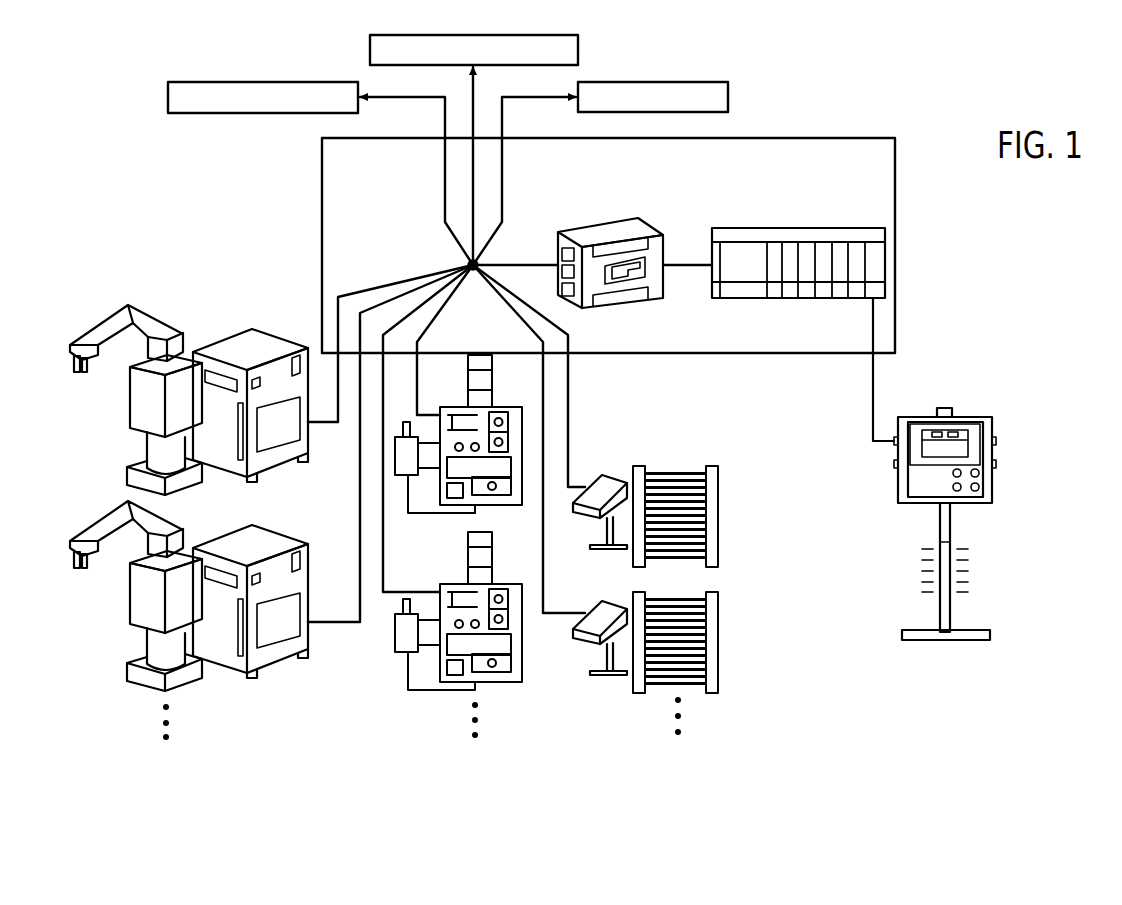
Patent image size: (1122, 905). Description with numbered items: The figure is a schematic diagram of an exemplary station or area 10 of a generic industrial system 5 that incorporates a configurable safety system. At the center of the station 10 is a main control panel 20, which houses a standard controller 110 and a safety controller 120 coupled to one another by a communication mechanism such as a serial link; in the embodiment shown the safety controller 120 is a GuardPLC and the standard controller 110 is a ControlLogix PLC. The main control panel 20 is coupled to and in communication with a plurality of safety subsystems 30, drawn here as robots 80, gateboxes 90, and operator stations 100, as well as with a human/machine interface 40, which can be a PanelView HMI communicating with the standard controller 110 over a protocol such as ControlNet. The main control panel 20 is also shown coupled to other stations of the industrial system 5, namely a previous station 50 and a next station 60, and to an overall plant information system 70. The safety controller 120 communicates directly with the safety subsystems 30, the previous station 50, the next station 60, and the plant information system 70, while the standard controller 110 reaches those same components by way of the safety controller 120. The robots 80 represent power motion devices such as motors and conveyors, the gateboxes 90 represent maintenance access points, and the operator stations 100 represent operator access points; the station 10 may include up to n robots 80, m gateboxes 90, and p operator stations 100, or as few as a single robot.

The industrial system 5 is at (1065, 675).
The station 10 is at (207, 200).
The main control panel 20 is at (829, 169).
The safety subsystems 30 is at (760, 750).
The human/machine interface 40 is at (1022, 516).
The previous station 50 is at (168, 93).
The next station 60 is at (728, 98).
The plant information system 70 is at (578, 48).
The robots 80 is at (283, 728).
The gateboxes 90 is at (540, 714).
The operator stations 100 is at (609, 719).
The standard controller 110 is at (798, 228).
The safety controller 120 is at (600, 220).